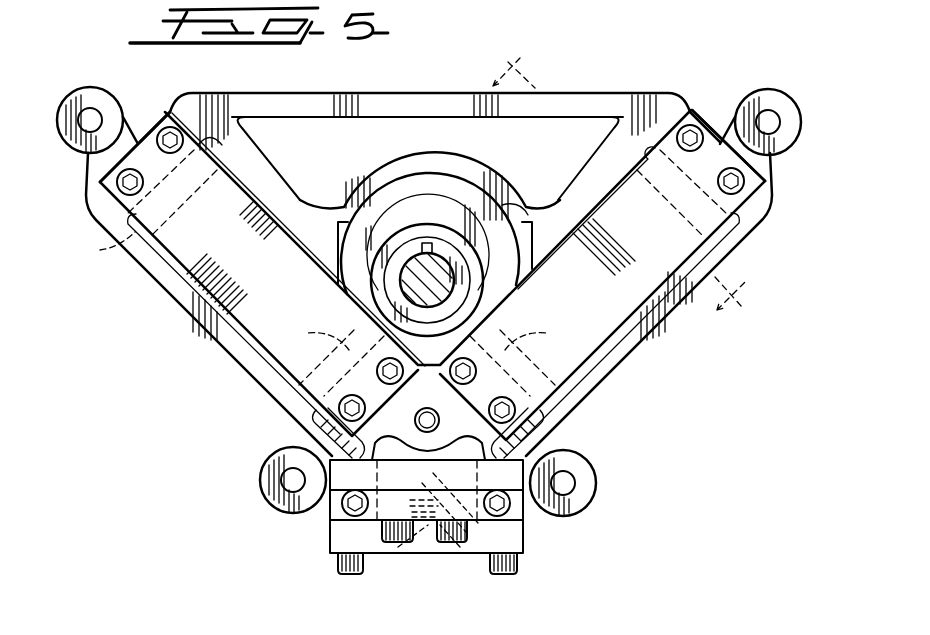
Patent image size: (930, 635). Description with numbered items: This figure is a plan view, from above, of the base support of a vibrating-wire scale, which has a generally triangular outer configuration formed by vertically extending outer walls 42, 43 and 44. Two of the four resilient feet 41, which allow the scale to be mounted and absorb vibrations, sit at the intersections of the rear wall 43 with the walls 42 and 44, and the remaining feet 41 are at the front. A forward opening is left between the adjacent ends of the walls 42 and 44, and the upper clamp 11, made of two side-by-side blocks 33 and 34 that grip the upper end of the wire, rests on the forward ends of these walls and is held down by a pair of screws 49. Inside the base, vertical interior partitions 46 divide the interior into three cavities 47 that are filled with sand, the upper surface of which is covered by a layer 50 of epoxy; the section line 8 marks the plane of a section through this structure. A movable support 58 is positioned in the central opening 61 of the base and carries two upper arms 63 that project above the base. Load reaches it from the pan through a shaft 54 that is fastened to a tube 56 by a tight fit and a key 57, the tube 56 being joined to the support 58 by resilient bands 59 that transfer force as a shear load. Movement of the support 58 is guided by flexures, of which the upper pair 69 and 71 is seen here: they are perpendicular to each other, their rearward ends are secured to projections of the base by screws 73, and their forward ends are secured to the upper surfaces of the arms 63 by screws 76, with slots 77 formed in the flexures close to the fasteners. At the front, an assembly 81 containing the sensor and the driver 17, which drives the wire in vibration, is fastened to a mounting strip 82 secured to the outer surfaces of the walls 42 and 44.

The section line 8- 8 is at (627, 173).
The upper clamp 11 is at (311, 528).
The driver 17 is at (417, 557).
The block 33 is at (505, 522).
The block 34 is at (518, 470).
The resilient feet 41 is at (80, 100).
The outer wall 42 is at (662, 316).
The outer wall 43 is at (400, 93).
The outer wall 44 is at (195, 320).
The interior partitions 46 is at (583, 180).
The interior cavities 47 is at (215, 150).
The screws 49 is at (362, 492).
The layer 50 is at (314, 152).
The shaft 54 is at (455, 272).
The tube 56 is at (463, 294).
The key 57 is at (432, 245).
The movable support 58 is at (422, 200).
The bands 59 is at (372, 282).
The central opening 61 is at (385, 196).
The upper arms 63 is at (330, 438).
The upper flexure 69 is at (247, 264).
The upper flexure 71 is at (656, 261).
The screws 73 is at (167, 128).
The screws 76 is at (455, 380).
The slots 77 is at (110, 251).
The assembly 81 is at (536, 558).
The mounting block or strip 82 is at (338, 540).